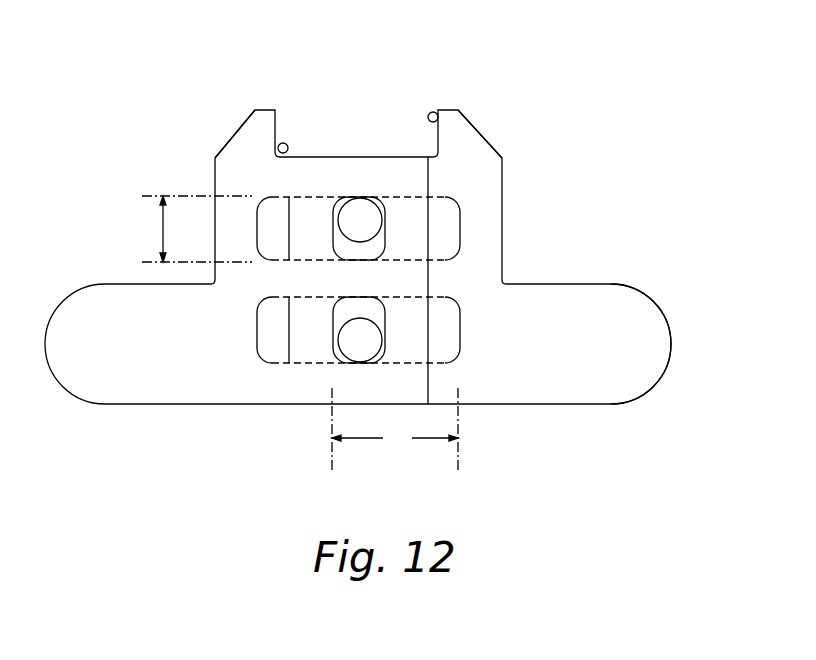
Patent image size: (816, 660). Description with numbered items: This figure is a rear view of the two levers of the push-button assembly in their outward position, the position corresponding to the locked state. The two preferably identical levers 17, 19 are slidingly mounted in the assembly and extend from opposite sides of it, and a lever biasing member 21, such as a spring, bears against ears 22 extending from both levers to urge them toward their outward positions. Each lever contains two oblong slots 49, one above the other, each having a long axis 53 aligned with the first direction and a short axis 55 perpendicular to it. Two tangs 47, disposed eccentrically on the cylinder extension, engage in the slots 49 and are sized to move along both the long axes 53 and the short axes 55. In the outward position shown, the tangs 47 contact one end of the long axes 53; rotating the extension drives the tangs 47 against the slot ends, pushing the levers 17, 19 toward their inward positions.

The lever 17 is at (141, 405).
The lever 19 is at (566, 405).
The lever biasing member 21 is at (430, 113).
The ears 22 is at (240, 128).
The tangs 47 is at (360, 213).
The slots 49 is at (273, 218).
The long axes 53 is at (395, 429).
The short axes 55 is at (162, 229).